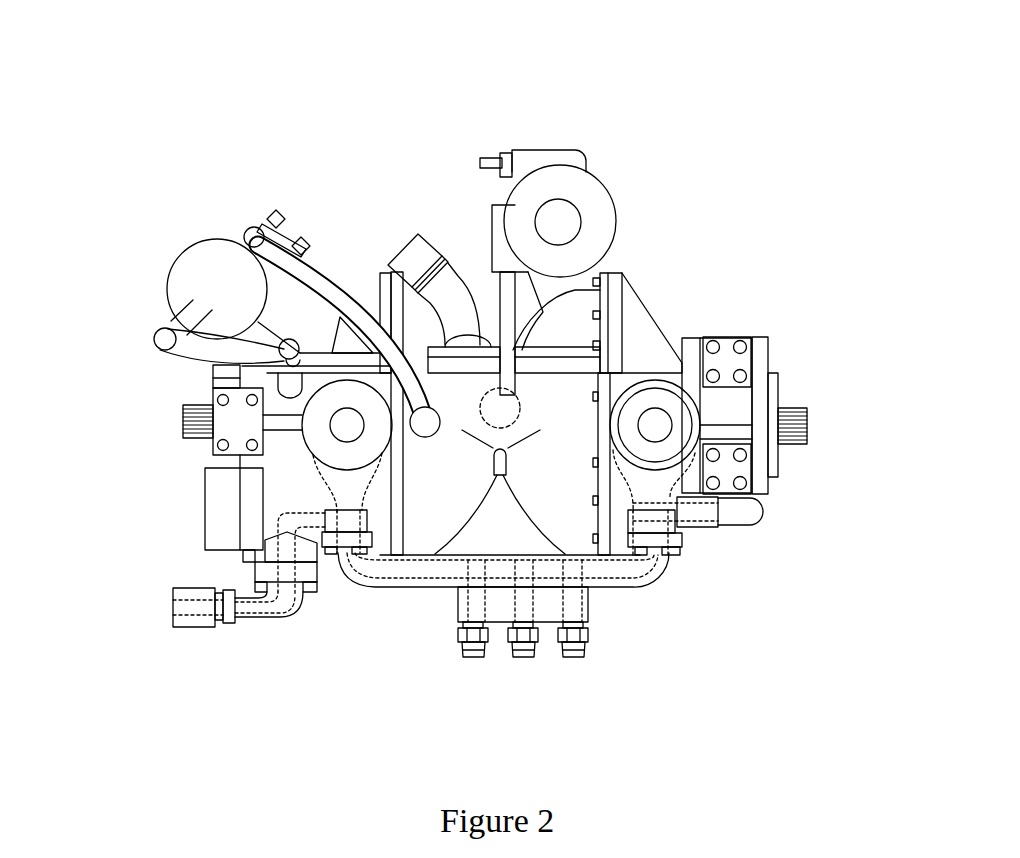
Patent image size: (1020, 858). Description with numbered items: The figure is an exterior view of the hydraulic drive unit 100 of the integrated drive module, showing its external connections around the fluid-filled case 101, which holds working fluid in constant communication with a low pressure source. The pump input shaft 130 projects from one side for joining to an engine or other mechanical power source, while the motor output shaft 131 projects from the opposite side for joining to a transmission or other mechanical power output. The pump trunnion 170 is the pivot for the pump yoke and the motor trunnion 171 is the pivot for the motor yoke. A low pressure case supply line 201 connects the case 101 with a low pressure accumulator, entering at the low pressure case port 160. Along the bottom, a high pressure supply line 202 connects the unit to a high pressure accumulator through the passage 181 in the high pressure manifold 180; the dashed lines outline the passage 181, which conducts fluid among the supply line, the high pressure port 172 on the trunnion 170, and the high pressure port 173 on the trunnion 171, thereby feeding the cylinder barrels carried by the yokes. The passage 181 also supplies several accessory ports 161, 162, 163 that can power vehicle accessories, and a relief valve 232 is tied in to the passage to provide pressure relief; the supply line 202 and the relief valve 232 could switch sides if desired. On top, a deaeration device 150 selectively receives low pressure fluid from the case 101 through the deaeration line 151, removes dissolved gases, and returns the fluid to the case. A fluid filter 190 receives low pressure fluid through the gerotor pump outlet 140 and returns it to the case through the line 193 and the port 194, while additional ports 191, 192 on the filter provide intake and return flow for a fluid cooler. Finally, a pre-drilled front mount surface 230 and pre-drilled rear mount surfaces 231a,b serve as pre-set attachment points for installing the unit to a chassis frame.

The hydraulic drive unit 100 is at (248, 46).
The fluid-filled case 101 is at (523, 520).
The pump input shaft 130 is at (200, 403).
The motor output shaft 131 is at (790, 407).
The gerotor pump outlet 140 is at (282, 343).
The deaeration device 150 is at (617, 192).
The deaeration line 151 is at (513, 338).
The low pressure case port 160 is at (505, 395).
The accessory port 161 is at (475, 659).
The accessory port 162 is at (524, 659).
The accessory port 163 is at (572, 659).
The pump trunnion 170 is at (330, 465).
The motor trunnion 171 is at (667, 452).
The high pressure port 172 is at (347, 463).
The high pressure port 173 is at (653, 460).
The high pressure manifold 180 is at (418, 567).
The passage 181 is at (412, 588).
The fluid filter 190 is at (208, 260).
The port 191 is at (273, 204).
The port 192 is at (297, 234).
The line 193 is at (340, 300).
The port 194 is at (433, 343).
The low pressure case supply line 201 is at (407, 257).
The high pressure supply line 202 is at (253, 620).
The pre-drilled front mount surface 230 is at (233, 422).
The pre-drilled rear mount surfaces 231a,b is at (769, 385).
The relief valve 232 is at (733, 518).